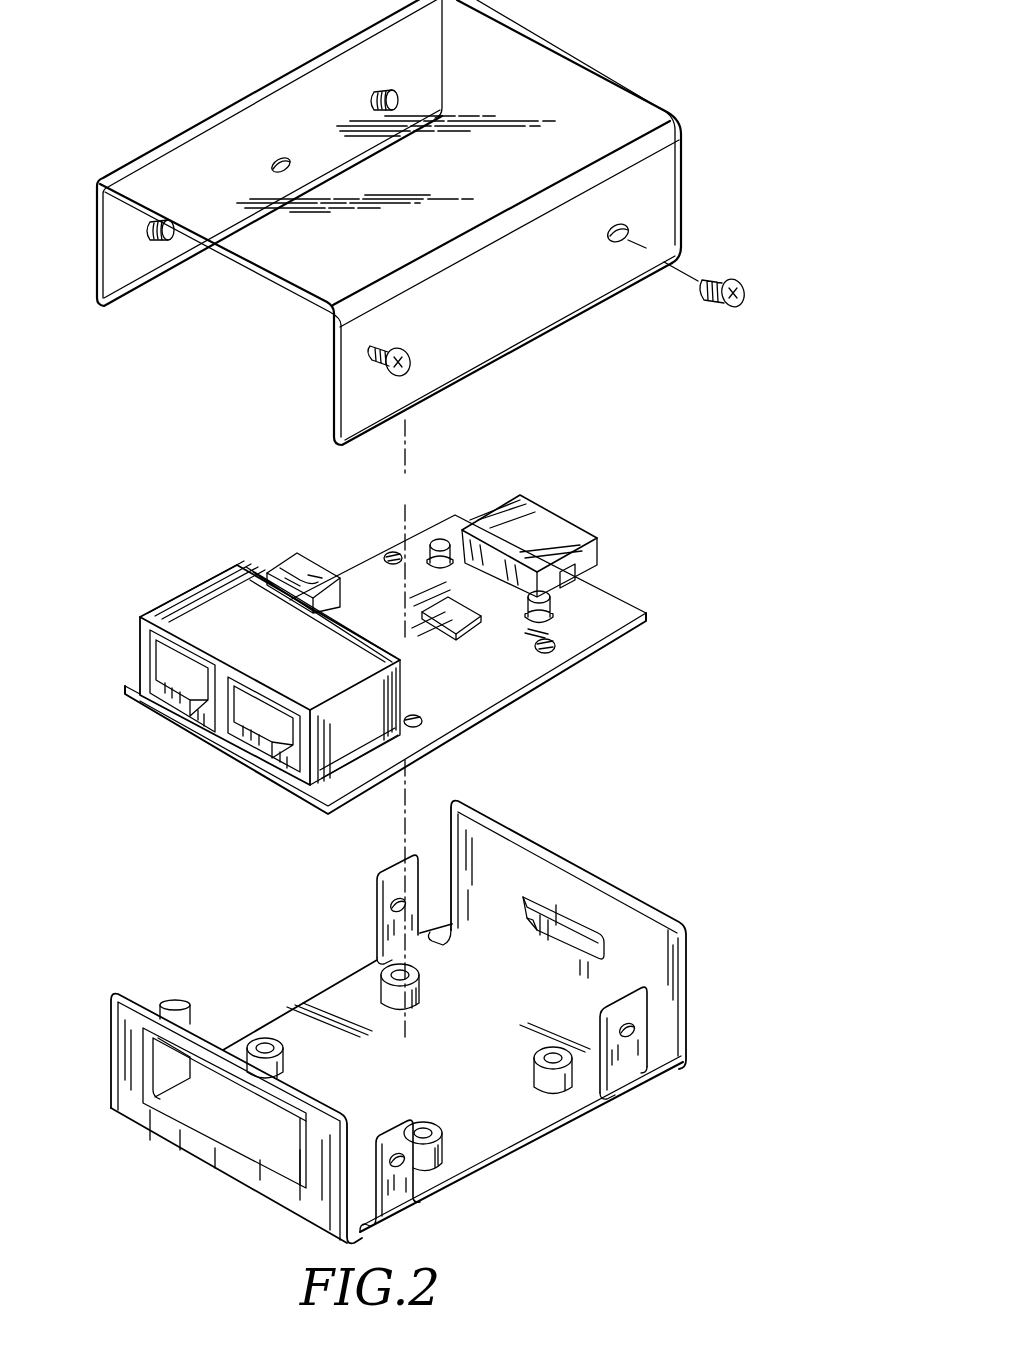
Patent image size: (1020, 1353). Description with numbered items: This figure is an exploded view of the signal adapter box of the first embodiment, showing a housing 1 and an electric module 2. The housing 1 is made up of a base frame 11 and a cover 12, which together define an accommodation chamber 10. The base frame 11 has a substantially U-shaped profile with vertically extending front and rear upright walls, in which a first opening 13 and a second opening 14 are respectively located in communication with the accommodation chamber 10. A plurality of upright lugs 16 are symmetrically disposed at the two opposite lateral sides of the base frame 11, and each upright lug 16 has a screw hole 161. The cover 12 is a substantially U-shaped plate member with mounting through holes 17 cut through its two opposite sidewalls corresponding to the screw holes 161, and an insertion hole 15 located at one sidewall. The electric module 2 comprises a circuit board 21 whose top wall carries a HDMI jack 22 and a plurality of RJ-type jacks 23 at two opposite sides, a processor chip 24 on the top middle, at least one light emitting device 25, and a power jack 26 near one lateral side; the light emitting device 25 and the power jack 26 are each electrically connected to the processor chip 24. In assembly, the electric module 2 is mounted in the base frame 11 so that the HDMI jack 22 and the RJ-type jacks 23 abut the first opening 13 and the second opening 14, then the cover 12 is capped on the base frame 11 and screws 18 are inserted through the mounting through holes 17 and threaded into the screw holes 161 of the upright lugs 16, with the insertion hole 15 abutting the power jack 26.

The housing 1 is at (654, 67).
The electric module 2 is at (397, 638).
The accommodation chamber 10 is at (429, 1022).
The base frame 11 is at (520, 1098).
The cover 12 is at (450, 222).
The first opening 13 is at (553, 905).
The second opening 14 is at (217, 1133).
The insertion hole 15 is at (278, 158).
The upright lug 16 is at (553, 1043).
The screw hole 161 is at (640, 1030).
The mounting through hole 17 is at (620, 240).
The screw 18 is at (748, 290).
The circuit board 21 is at (453, 714).
The HDMI jack 22 is at (540, 513).
The RJ-type jack 23 is at (180, 706).
The processor chip 24 is at (463, 622).
The light emitting device 25 is at (441, 537).
The power jack 26 is at (292, 566).